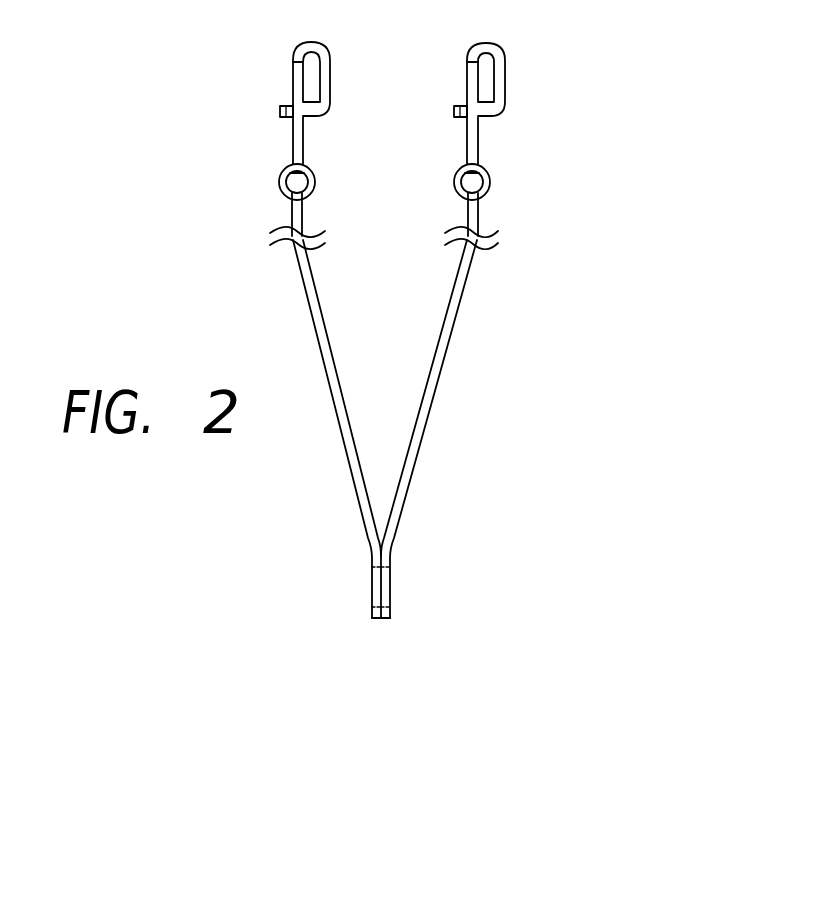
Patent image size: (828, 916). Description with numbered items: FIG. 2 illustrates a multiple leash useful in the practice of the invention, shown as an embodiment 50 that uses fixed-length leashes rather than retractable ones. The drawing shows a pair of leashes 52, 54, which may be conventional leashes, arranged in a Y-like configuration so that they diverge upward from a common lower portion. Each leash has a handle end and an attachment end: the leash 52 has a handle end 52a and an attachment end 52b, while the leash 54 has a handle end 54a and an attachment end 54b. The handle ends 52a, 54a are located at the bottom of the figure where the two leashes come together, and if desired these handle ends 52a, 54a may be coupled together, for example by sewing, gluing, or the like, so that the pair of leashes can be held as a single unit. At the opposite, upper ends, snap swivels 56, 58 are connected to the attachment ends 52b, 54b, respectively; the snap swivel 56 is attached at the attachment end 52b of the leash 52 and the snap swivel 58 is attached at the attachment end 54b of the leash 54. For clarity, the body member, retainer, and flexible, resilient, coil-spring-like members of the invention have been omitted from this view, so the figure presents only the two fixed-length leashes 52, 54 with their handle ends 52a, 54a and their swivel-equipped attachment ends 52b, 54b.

The embodiment 50 is at (592, 372).
The leash 52 is at (433, 402).
The handle end 52a is at (392, 583).
The attachment end 52b is at (478, 215).
The leash 54 is at (339, 440).
The handle end 54a is at (372, 583).
The attachment end 54b is at (288, 211).
The snap swivel 56 is at (505, 78).
The snap swivel 58 is at (293, 80).